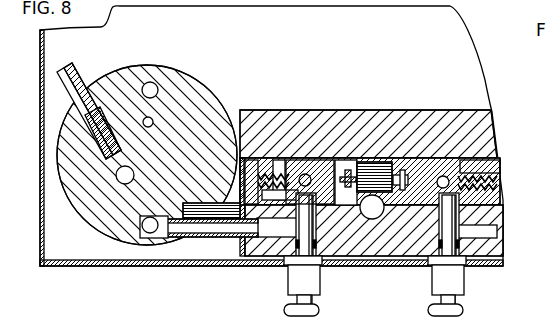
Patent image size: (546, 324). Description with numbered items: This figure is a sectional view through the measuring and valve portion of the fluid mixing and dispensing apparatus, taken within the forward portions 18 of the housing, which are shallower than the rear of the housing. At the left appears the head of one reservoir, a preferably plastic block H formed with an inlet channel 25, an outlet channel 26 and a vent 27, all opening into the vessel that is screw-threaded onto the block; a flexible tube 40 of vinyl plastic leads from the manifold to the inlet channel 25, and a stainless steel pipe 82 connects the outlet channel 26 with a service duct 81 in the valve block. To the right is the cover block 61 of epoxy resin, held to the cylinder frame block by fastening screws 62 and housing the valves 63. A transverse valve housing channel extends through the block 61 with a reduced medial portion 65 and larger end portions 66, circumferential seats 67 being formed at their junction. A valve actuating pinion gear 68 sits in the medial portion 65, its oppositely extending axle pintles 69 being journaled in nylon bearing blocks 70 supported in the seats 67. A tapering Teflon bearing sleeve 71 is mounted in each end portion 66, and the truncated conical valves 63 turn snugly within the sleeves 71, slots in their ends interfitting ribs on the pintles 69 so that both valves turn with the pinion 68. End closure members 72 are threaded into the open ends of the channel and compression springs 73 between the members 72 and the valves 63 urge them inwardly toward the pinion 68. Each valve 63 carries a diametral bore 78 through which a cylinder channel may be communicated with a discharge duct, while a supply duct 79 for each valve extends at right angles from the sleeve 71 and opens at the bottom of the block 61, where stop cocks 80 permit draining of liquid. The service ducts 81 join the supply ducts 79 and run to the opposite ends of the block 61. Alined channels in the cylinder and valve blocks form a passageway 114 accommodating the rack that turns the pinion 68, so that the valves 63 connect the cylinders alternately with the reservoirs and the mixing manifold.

The block H is at (176, 76).
The forward portions of the housing 18 is at (145, 267).
The inlet channel 25 is at (134, 174).
The outlet channel 26 is at (141, 223).
The vent 27 is at (160, 92).
The flexible tube 40 is at (82, 82).
The cover block 61 is at (265, 150).
The fastening screws 62 is at (505, 160).
The valves 63 is at (318, 155).
The medial portion 65 is at (384, 157).
The end portions 66 is at (281, 155).
The circumferential seats 67 is at (360, 155).
The valve actuating pinion gear 68 is at (393, 157).
The axle pintles 69 is at (367, 250).
The bearing blocks 70 is at (340, 150).
The bearing sleeve 71 is at (315, 150).
The end closure members 72 is at (253, 150).
The compression springs 73 is at (226, 243).
The diametral bore 78 is at (300, 155).
The supply duct 79 is at (322, 252).
The stop cocks 80 is at (290, 292).
The service ducts 81 is at (274, 232).
The pipes 82 is at (200, 240).
The passageway 114 is at (372, 207).